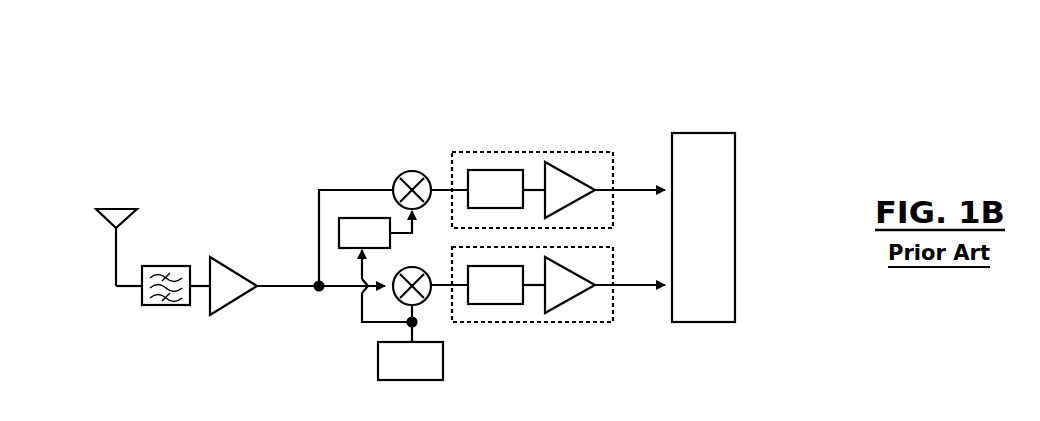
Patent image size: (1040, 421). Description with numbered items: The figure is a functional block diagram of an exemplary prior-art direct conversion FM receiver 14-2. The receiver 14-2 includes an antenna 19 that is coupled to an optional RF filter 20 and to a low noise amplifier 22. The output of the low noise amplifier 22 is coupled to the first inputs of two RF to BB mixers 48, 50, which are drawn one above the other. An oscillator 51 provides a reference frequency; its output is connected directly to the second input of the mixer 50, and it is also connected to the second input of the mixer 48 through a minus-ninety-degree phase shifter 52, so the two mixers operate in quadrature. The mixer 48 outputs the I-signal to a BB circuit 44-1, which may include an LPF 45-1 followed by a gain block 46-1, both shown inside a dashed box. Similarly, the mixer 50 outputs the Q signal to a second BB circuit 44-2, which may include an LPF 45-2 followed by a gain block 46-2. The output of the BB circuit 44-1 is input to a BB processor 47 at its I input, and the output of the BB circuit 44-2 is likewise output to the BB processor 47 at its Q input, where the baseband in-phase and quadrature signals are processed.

The direct conversion receiver 14-2 is at (222, 108).
The antenna 19 is at (133, 215).
The RF filter 20 is at (170, 305).
The low noise amplifier 22 is at (237, 300).
The RF to BB mixer 48 is at (405, 170).
The RF to BB mixer 50 is at (417, 305).
The −90° phase shifter 52 is at (393, 237).
The oscillator 51 is at (415, 382).
The BB circuit 44-1 is at (597, 150).
The LPF 45-1 is at (490, 170).
The gain block 46-1 is at (557, 163).
The BB circuit 44-2 is at (613, 325).
The LPF 45-2 is at (490, 304).
The gain block 46-2 is at (563, 305).
The BB processor 47 is at (700, 132).